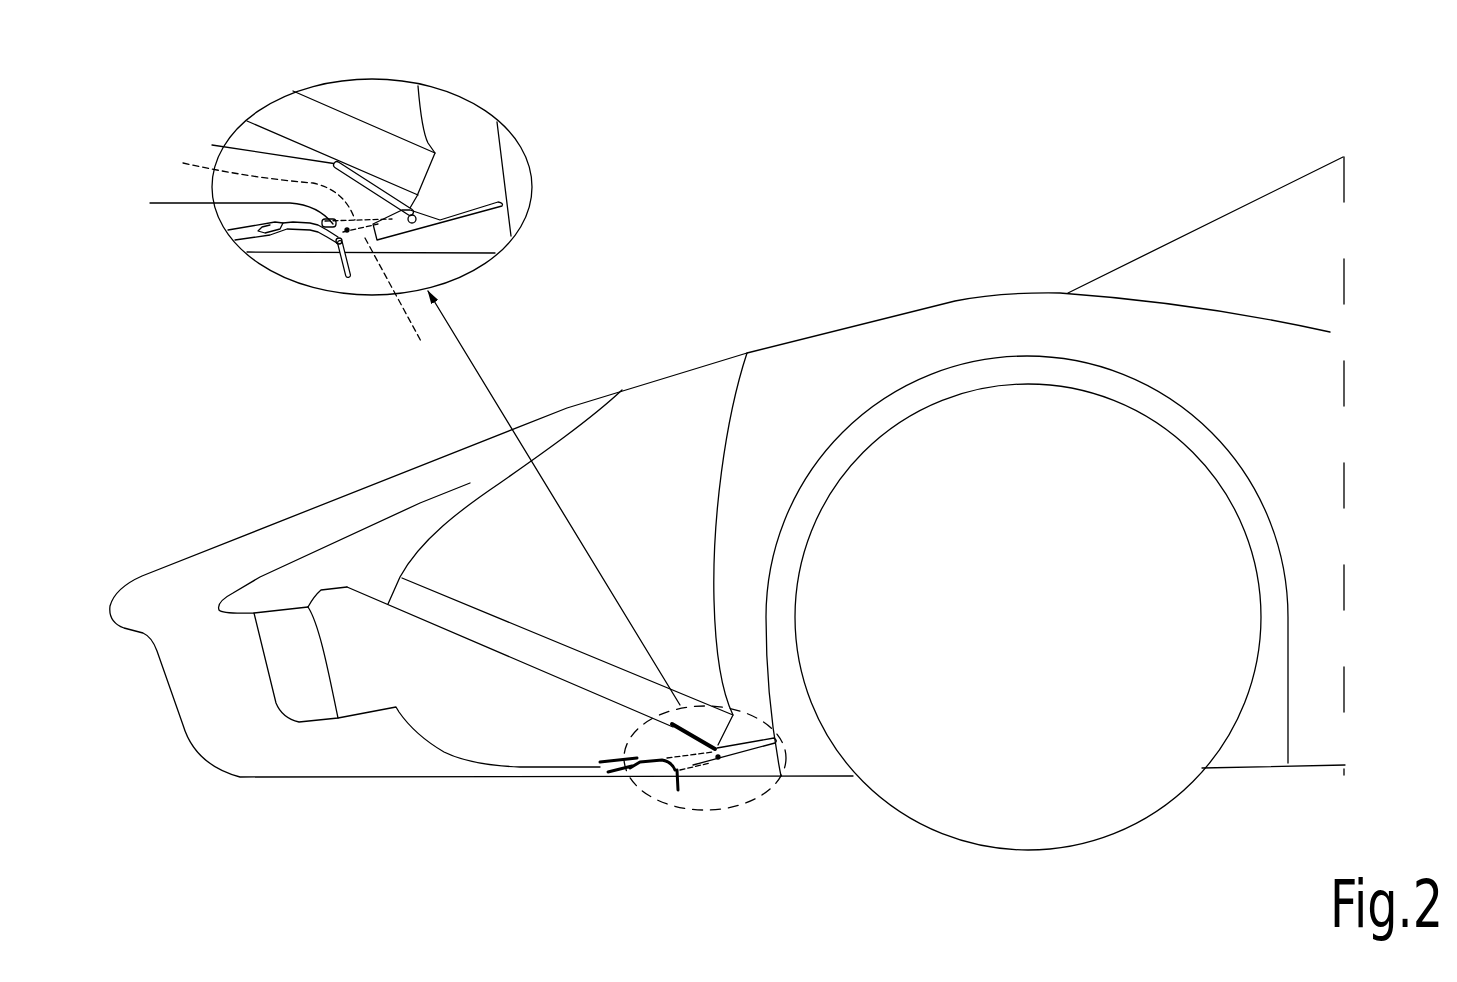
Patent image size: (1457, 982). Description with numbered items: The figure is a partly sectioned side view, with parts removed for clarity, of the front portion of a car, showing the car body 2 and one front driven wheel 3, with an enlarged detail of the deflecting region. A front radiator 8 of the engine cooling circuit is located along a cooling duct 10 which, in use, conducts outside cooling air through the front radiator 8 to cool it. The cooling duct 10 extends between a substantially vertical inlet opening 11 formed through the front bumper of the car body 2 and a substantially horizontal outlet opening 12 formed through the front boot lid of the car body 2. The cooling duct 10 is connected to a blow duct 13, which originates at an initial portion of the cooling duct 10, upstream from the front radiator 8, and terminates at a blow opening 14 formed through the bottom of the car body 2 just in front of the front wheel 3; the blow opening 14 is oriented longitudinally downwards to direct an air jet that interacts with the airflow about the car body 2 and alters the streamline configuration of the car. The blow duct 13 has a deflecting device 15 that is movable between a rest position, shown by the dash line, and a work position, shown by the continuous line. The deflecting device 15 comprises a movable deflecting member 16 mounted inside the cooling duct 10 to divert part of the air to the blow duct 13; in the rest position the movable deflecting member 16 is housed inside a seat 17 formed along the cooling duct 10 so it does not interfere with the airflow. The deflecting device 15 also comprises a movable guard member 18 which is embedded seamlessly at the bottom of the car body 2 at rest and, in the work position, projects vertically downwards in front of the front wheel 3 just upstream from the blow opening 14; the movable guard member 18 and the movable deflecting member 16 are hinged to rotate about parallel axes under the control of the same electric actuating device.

The car body 2 is at (1095, 213).
The front driven wheel 3 is at (1132, 795).
The front radiator 8 is at (502, 628).
The cooling duct 10 is at (655, 437).
The inlet opening 11 is at (305, 657).
The outlet opening 12 is at (695, 367).
The blow duct 13 is at (252, 208).
The blow opening 14 is at (696, 792).
The deflecting device 15 is at (645, 810).
The movable deflecting member 16 is at (227, 155).
The seat 17 is at (293, 213).
The movable guard member 18 is at (342, 272).